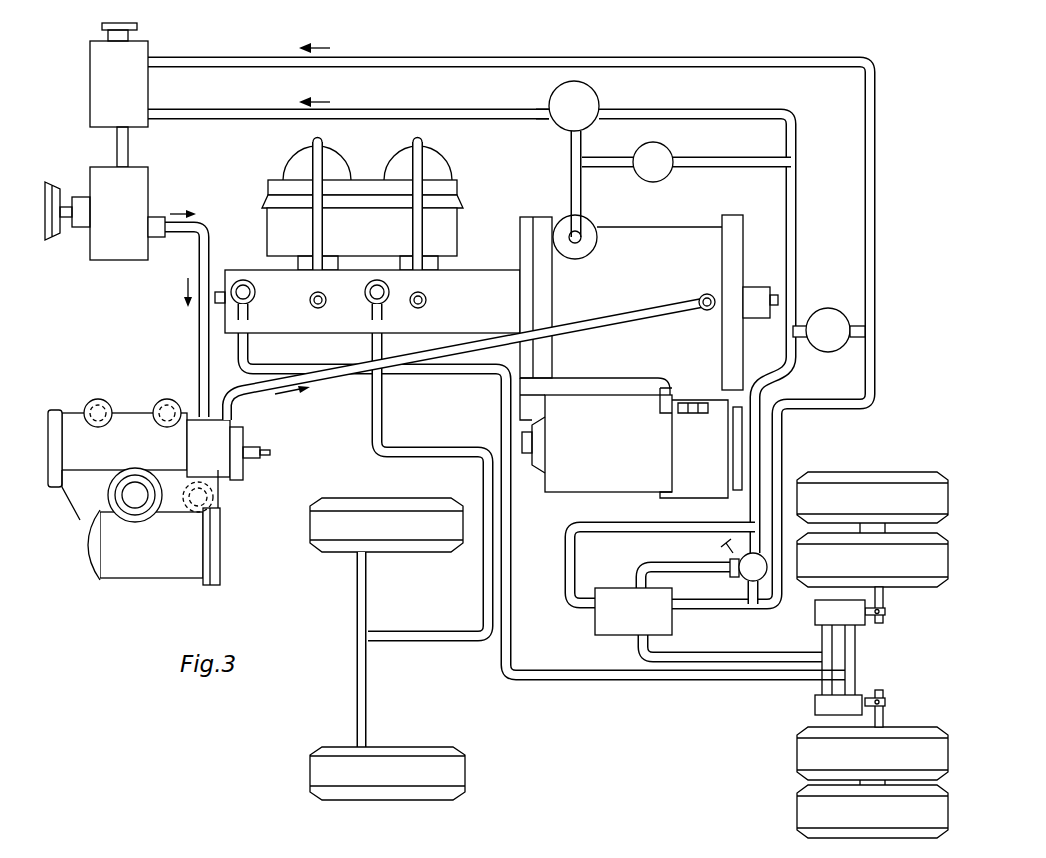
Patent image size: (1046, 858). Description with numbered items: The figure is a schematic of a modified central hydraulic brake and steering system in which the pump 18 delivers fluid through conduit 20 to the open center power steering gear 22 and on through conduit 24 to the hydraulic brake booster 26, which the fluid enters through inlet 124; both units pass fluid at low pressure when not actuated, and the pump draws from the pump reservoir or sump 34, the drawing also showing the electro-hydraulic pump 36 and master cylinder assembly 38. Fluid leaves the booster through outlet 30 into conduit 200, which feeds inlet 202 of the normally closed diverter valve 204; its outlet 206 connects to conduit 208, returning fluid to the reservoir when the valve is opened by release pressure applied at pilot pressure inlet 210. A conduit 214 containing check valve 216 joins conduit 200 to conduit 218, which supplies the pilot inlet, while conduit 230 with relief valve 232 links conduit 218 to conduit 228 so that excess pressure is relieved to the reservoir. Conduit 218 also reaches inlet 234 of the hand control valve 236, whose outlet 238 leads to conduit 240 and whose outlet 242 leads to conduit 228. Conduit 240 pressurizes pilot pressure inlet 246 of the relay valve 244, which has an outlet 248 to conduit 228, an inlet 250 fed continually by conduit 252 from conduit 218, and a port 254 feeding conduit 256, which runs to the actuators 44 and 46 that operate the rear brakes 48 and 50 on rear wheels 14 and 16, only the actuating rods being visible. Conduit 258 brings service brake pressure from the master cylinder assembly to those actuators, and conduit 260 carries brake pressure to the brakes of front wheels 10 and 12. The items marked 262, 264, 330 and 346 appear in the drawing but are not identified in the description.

The front wheel 10 is at (387, 541).
The front wheel 12 is at (385, 770).
The rear wheel 14 is at (877, 477).
The rear wheel 16 is at (853, 839).
The pump 18 is at (120, 258).
The conduit 20 is at (197, 362).
The power steering gear 22 is at (145, 566).
The conduit 24 is at (242, 394).
The hydraulic brake booster 26 is at (517, 244).
The outlet 30 is at (586, 236).
The pump reservoir or sump 34 is at (134, 78).
The electro-hydraulic pump 36 is at (592, 492).
The master cylinder assembly 38 is at (266, 208).
The actuator 44 is at (853, 619).
The actuator 46 is at (812, 706).
The rear brake 48 is at (880, 590).
The rear brake 50 is at (880, 712).
The inlet 124 is at (711, 297).
The conduit 200 is at (583, 186).
The inlet 202 is at (569, 141).
The diverter valve 204 is at (577, 81).
The outlet 206 is at (548, 110).
The conduit 208 is at (447, 120).
The pilot pressure inlet 210 is at (598, 113).
The conduit 214 is at (700, 170).
The check valve 216 is at (672, 153).
The conduit 218 is at (790, 231).
The conduit 228 is at (412, 64).
The conduit 230 is at (804, 326).
The relief valve 232 is at (838, 348).
The inlet 234 is at (752, 540).
The hand control valve 236 is at (735, 568).
The outlet 238 is at (736, 579).
The conduit 240 is at (662, 565).
The outlet 242 is at (756, 592).
The relay valve 244 is at (598, 636).
The pilot pressure inlet 246 is at (636, 584).
The outlet 248 is at (676, 612).
The inlet 250 is at (592, 605).
The conduit 252 is at (566, 575).
The port 254 is at (637, 641).
The conduit 256 is at (716, 661).
The conduit 258 is at (568, 681).
The conduit 260 is at (482, 631).
The element 262 is at (300, 857).
The element 264 is at (402, 850).
The element 330 is at (512, 852).
The fitting 346 is at (775, 300).